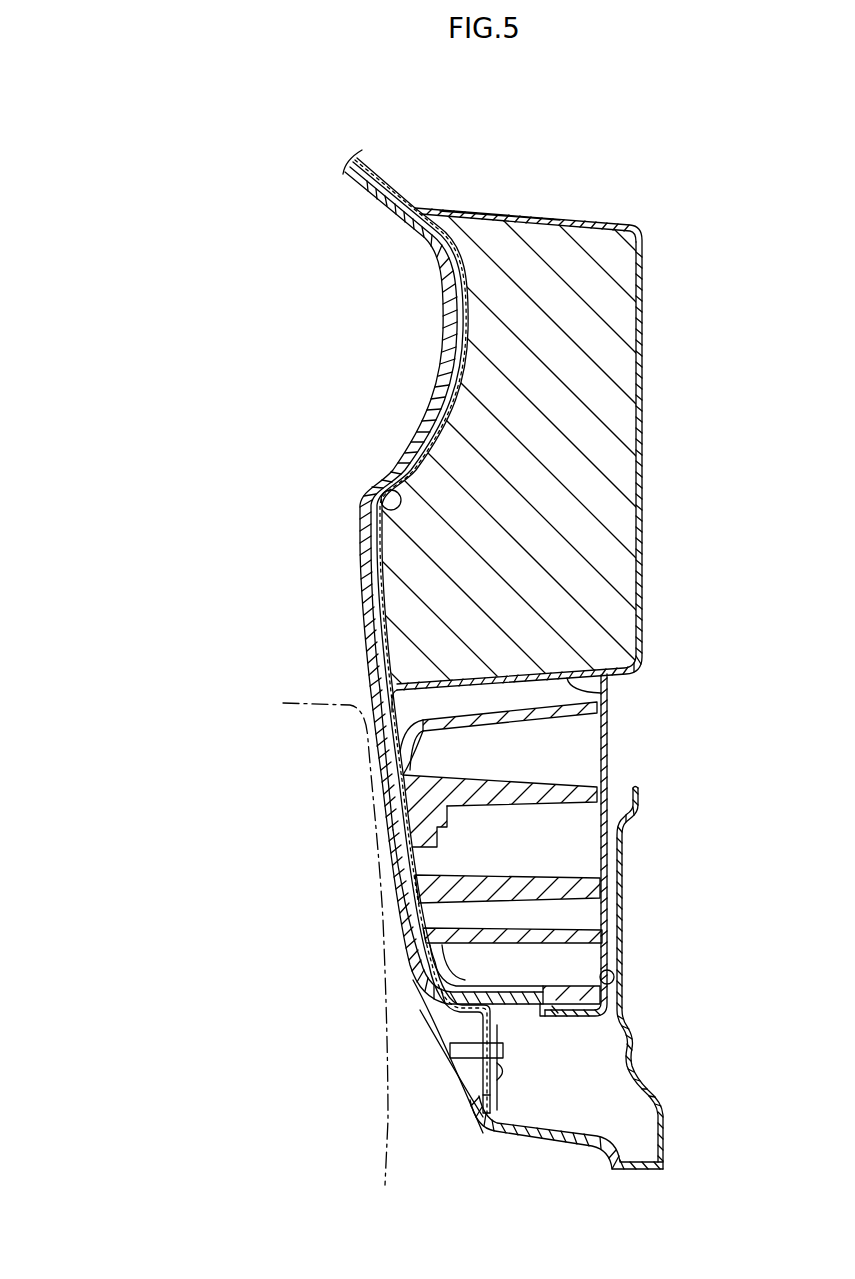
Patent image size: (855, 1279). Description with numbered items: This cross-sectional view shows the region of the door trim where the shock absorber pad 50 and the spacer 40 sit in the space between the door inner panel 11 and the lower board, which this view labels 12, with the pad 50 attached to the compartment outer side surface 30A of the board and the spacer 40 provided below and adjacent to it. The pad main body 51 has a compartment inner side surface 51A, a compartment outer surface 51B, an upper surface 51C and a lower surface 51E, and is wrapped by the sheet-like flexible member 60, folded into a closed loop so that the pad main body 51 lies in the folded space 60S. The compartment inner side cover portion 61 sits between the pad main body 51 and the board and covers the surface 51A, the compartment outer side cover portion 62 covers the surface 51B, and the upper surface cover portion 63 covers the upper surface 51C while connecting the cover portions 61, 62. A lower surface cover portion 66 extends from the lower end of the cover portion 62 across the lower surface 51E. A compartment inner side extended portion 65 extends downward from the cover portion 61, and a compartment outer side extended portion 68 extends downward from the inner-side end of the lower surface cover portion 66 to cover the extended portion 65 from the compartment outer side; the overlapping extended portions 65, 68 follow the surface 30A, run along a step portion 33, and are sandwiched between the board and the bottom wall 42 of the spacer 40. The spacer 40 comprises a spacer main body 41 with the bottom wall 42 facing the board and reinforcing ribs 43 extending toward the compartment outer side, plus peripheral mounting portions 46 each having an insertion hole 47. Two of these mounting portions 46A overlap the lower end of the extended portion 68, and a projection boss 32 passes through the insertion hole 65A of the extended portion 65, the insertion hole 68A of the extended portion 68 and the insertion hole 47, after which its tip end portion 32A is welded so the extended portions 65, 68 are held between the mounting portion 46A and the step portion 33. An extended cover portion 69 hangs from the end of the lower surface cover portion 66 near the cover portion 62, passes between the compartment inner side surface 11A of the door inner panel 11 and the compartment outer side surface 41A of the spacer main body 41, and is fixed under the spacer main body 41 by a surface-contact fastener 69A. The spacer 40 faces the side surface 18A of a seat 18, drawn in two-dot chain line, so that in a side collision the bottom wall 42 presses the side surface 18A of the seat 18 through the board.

The door inner panel 11 is at (663, 1127).
The compartment inner side surface 11A is at (615, 981).
The door panel 12 is at (371, 631).
The seat 18 is at (369, 959).
The side surface 18A is at (369, 959).
The compartment outer side surface 30A is at (382, 196).
The projection boss 32 is at (566, 1133).
The tip end portion 32A is at (507, 1063).
The step portion 33 is at (462, 1100).
The spacer 40 is at (580, 775).
The spacer main body 41 is at (562, 982).
The compartment outer side surface 41A is at (428, 914).
The bottom wall 42 is at (418, 858).
The reinforcing ribs 43 is at (538, 884).
The mounting portions 46 is at (512, 1154).
The mounting portions 46A is at (497, 1072).
The insertion hole 47 is at (500, 1060).
The shock absorber pad 50 is at (622, 263).
The pad main body 51 is at (615, 319).
The compartment inner side surface 51A is at (372, 630).
The compartment outer surface 51B is at (645, 433).
The upper surface 51C is at (545, 219).
The lower surface 51E is at (523, 681).
The flexible member 60 is at (664, 368).
The folded space 60S is at (552, 562).
The compartment inner side cover portion 61 is at (364, 540).
The compartment outer side cover portion 62 is at (645, 492).
The upper surface cover portion 63 is at (504, 211).
The compartment inner side extended portion 65 is at (392, 764).
The insertion hole 65A is at (500, 1052).
The lower surface cover portion 66 is at (609, 693).
The compartment outer side extended portion 68 is at (413, 893).
The insertion hole 68A is at (483, 1034).
The extended cover portion 69 is at (609, 916).
The surface-contact fastener 69A is at (562, 1006).